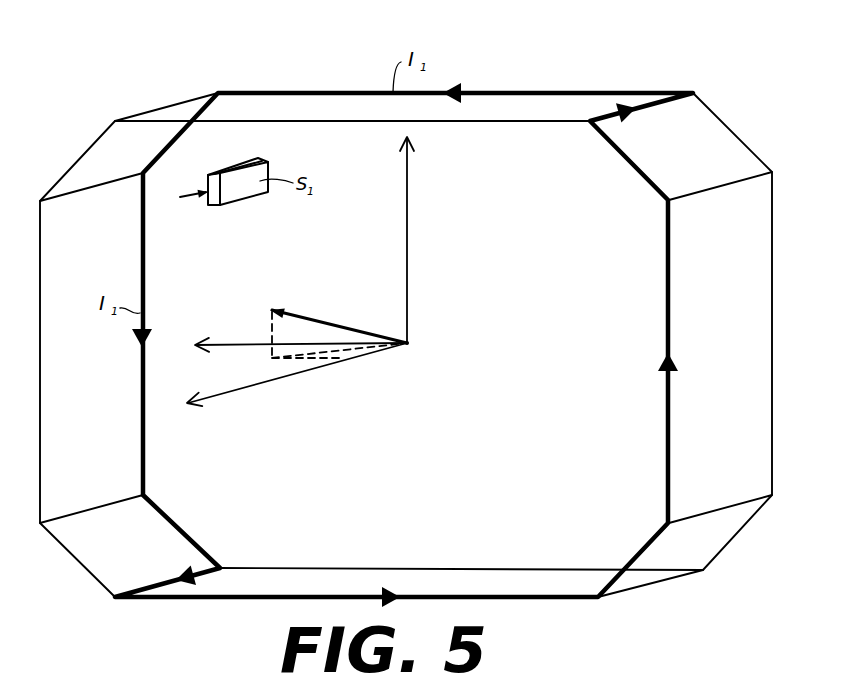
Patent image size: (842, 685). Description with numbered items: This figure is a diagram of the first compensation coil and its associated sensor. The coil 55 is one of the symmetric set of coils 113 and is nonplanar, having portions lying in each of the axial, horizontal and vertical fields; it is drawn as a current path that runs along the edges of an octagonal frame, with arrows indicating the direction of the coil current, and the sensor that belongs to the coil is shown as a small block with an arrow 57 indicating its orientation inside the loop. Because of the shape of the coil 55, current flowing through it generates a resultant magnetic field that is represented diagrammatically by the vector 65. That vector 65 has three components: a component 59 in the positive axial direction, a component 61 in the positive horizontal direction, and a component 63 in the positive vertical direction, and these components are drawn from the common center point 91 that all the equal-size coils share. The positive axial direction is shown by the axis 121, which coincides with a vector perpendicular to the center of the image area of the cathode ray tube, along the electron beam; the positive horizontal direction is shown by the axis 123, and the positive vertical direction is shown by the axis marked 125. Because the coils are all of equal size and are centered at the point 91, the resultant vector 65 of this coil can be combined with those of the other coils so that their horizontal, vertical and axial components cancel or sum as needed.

The coil 55 is at (563, 90).
The set of coils 113 is at (281, 120).
The sensor direction arrow 57 is at (190, 200).
The positive vertical component 63 is at (413, 292).
The positive vertical direction 125 is at (407, 168).
The horizontal axis 123 is at (231, 343).
The axial axis 121 is at (233, 397).
The common center point 91 is at (413, 348).
The positive horizontal component 61 is at (347, 338).
The resultant magnetic field vector 65 is at (274, 293).
The positive axial component 59 is at (343, 362).